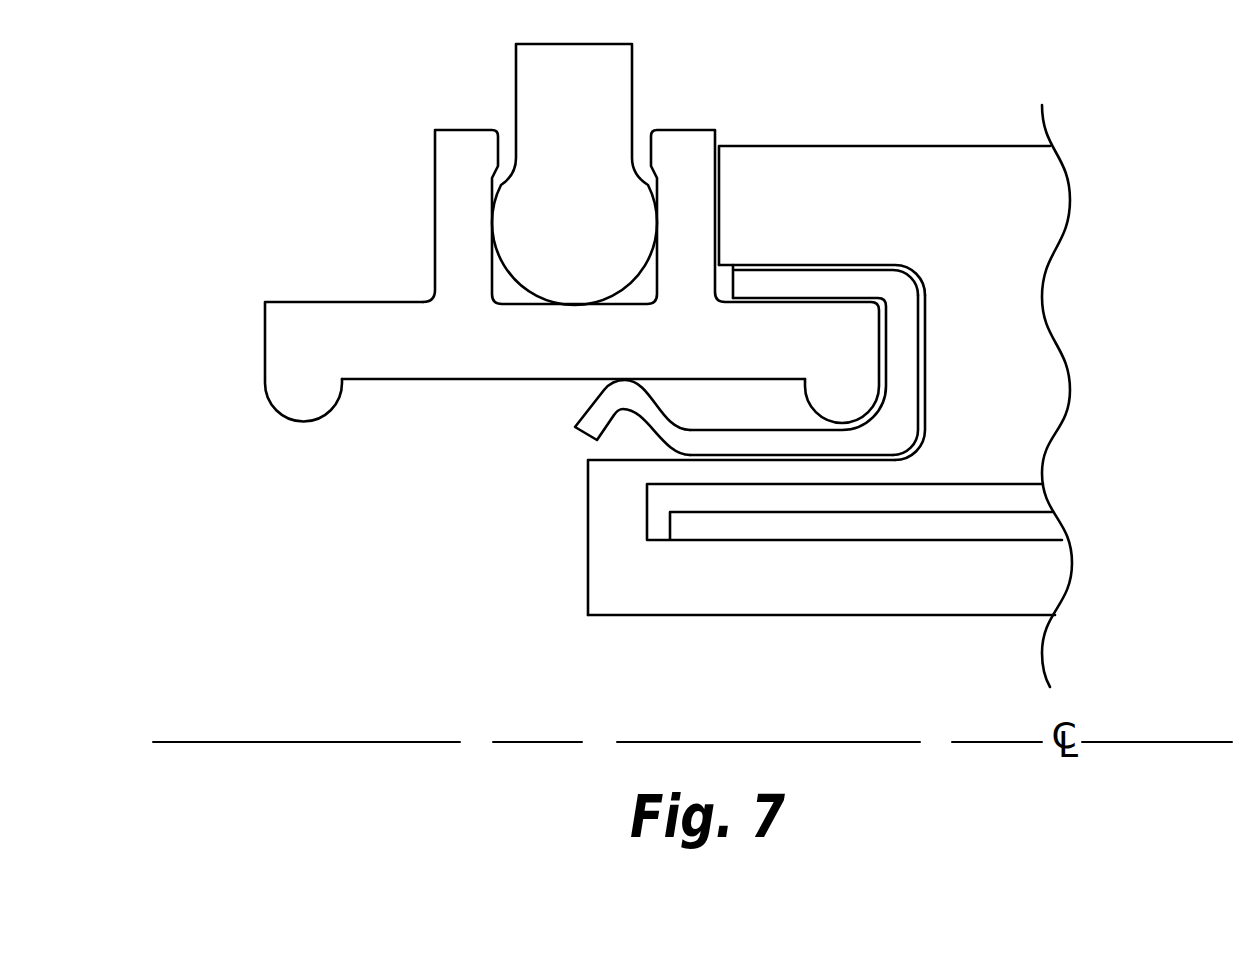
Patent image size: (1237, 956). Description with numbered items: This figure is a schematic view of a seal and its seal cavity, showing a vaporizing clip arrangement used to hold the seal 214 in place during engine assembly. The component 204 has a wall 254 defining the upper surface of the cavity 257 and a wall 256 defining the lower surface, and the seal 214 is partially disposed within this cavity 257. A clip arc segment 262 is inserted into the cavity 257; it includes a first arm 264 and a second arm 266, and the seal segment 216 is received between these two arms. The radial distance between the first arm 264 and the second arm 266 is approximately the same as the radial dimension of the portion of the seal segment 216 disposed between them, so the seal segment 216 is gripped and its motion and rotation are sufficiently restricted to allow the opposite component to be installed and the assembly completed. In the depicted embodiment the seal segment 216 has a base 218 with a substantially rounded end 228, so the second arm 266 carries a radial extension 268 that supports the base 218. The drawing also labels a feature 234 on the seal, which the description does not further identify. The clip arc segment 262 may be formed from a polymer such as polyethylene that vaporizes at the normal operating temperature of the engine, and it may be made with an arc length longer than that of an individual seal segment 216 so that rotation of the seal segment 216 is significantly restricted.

The component 204 is at (797, 616).
The seal 214 is at (414, 152).
The seal segment 216 is at (296, 301).
The base 218 is at (440, 381).
The substantially rounded end 228 is at (850, 388).
The ball stud 234 is at (548, 44).
The wall 254 is at (762, 163).
The wall 256 is at (610, 575).
The cavity 257 is at (923, 378).
The clip arc segment 262 is at (912, 306).
The first arm 264 is at (852, 284).
The second arm 266 is at (845, 442).
The radial extension 268 is at (593, 398).